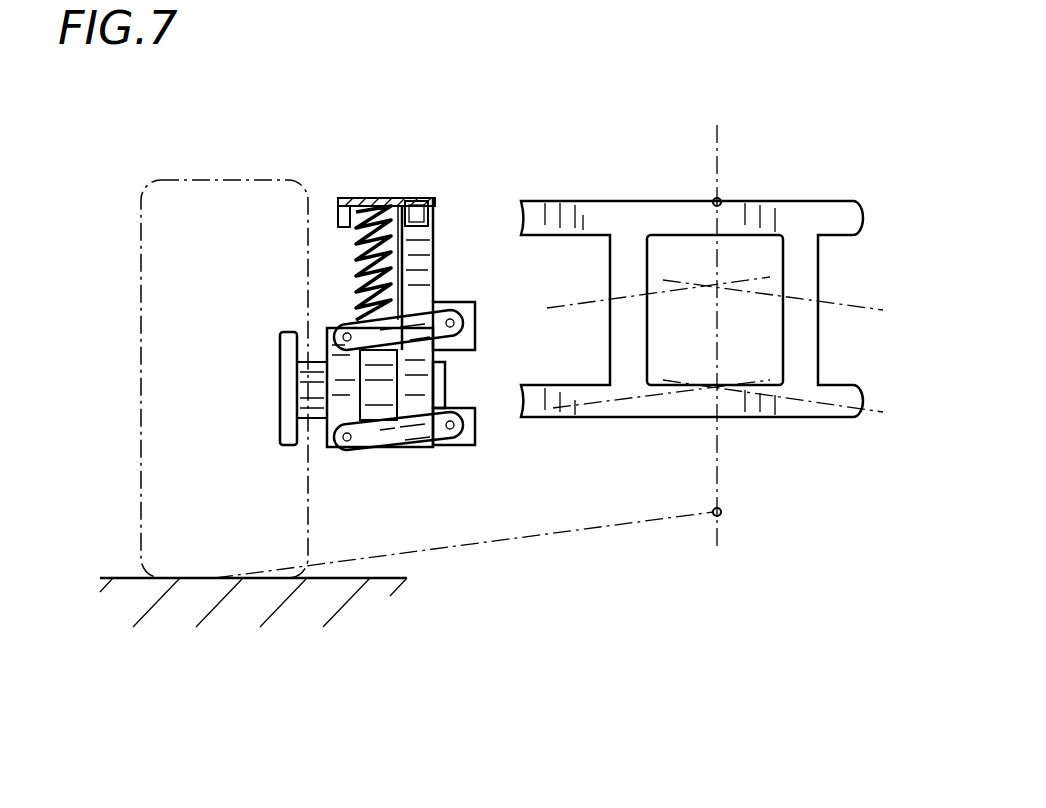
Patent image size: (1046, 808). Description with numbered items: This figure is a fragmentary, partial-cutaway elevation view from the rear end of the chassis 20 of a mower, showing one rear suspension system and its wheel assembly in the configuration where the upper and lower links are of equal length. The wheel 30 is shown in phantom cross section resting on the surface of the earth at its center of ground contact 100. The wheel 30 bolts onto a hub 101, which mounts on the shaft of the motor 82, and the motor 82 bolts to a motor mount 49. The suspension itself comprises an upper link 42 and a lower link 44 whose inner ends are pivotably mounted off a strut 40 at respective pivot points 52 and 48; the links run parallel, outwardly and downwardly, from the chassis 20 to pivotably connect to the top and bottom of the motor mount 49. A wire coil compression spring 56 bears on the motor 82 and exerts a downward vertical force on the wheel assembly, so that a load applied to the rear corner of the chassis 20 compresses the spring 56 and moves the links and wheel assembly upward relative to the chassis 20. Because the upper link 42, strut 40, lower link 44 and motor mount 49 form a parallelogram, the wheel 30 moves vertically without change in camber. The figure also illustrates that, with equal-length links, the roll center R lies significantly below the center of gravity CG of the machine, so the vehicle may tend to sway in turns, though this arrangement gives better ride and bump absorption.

The chassis 20 is at (662, 180).
The wheel 30 is at (206, 180).
The strut 40 is at (435, 258).
The upper link 42 is at (447, 337).
The lower link 44 is at (388, 450).
The pivot point 48 is at (443, 445).
The motor mount 49 is at (330, 328).
The pivot point 52 is at (455, 315).
The spring 56 is at (375, 200).
The motor 82 is at (445, 388).
The center of ground contact 100 is at (222, 578).
The hub 101 is at (290, 372).